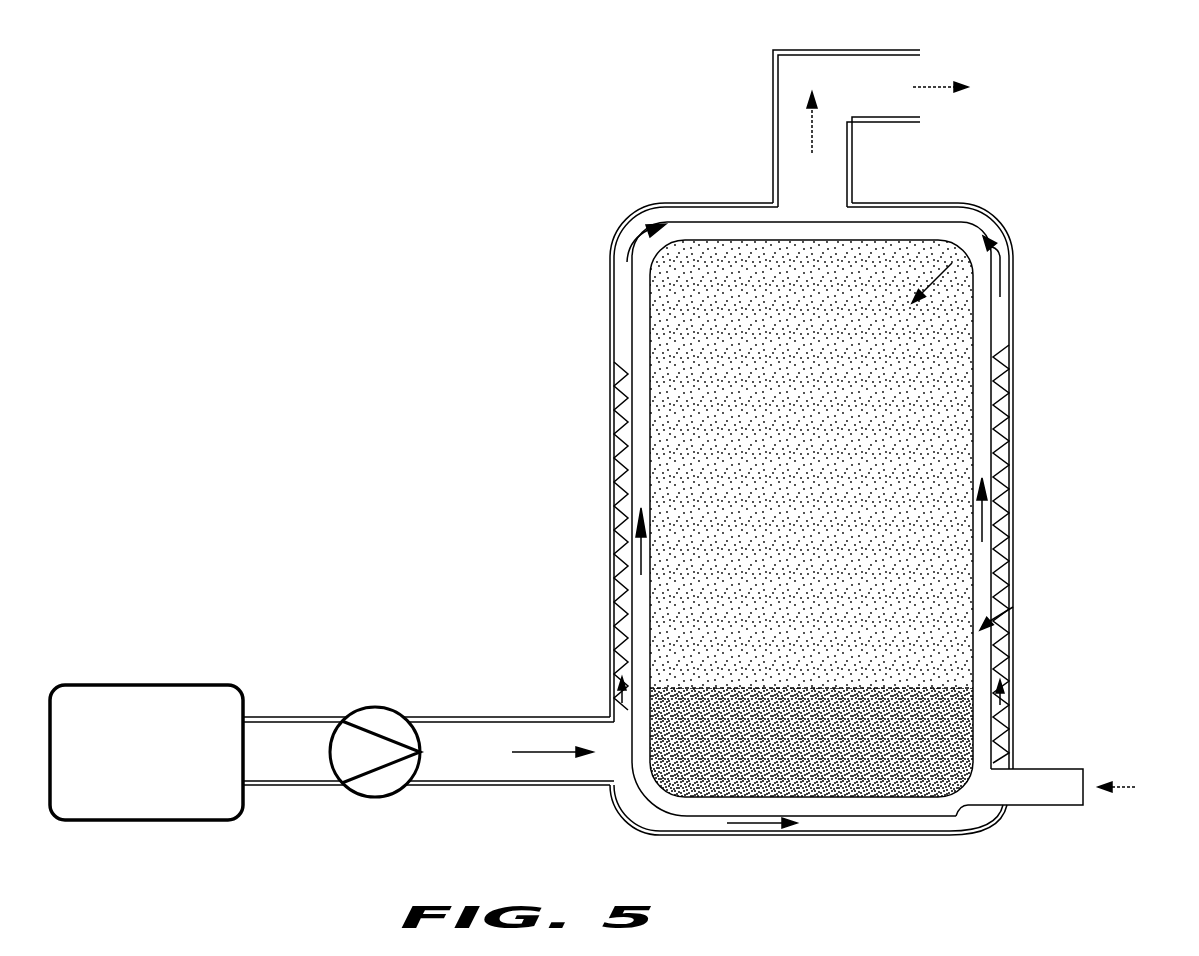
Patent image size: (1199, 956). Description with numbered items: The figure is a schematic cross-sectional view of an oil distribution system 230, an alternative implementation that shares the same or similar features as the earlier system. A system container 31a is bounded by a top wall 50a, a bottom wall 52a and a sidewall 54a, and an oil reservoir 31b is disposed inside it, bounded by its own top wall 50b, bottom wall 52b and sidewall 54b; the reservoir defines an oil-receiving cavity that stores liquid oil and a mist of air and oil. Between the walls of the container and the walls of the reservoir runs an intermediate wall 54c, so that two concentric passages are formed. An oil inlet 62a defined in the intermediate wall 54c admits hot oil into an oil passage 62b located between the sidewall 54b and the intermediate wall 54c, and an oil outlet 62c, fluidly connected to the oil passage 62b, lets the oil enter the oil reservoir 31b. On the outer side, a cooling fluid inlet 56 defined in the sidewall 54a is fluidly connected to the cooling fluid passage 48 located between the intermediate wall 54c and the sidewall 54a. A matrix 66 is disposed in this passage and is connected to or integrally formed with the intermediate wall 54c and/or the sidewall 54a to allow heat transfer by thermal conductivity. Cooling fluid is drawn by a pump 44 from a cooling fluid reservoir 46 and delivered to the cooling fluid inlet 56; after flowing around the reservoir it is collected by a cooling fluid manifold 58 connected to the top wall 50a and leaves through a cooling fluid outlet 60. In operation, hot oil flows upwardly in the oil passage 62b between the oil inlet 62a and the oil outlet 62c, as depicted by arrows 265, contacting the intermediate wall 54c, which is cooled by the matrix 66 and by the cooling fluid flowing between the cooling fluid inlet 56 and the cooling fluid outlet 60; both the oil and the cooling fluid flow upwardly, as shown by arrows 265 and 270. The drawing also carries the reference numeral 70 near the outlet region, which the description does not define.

The oil distribution system 230 is at (282, 177).
The pump 44 is at (375, 797).
The cooling fluid reservoir 46 is at (145, 820).
The cooling fluid passage 48 is at (812, 501).
The top wall 50a is at (707, 205).
The top wall 50b is at (728, 243).
The bottom wall 52a is at (826, 834).
The bottom wall 52b is at (891, 798).
The sidewall 54a is at (610, 302).
The sidewall 54b is at (735, 567).
The intermediate wall 54c is at (632, 330).
The cooling fluid inlet 56 is at (611, 768).
The cooling fluid manifold 58 is at (838, 204).
The cooling fluid outlet 60 is at (773, 165).
The oil inlet 62a is at (1063, 777).
The oil passage 62b is at (1013, 607).
The oil outlet 62c is at (968, 245).
The matrix 66 is at (620, 515).
The air outflow 70 is at (812, 128).
The arrows 265 is at (1012, 306).
The arrows 270 is at (633, 232).
The system container 31a is at (1005, 235).
The oil reservoir 31b is at (973, 366).